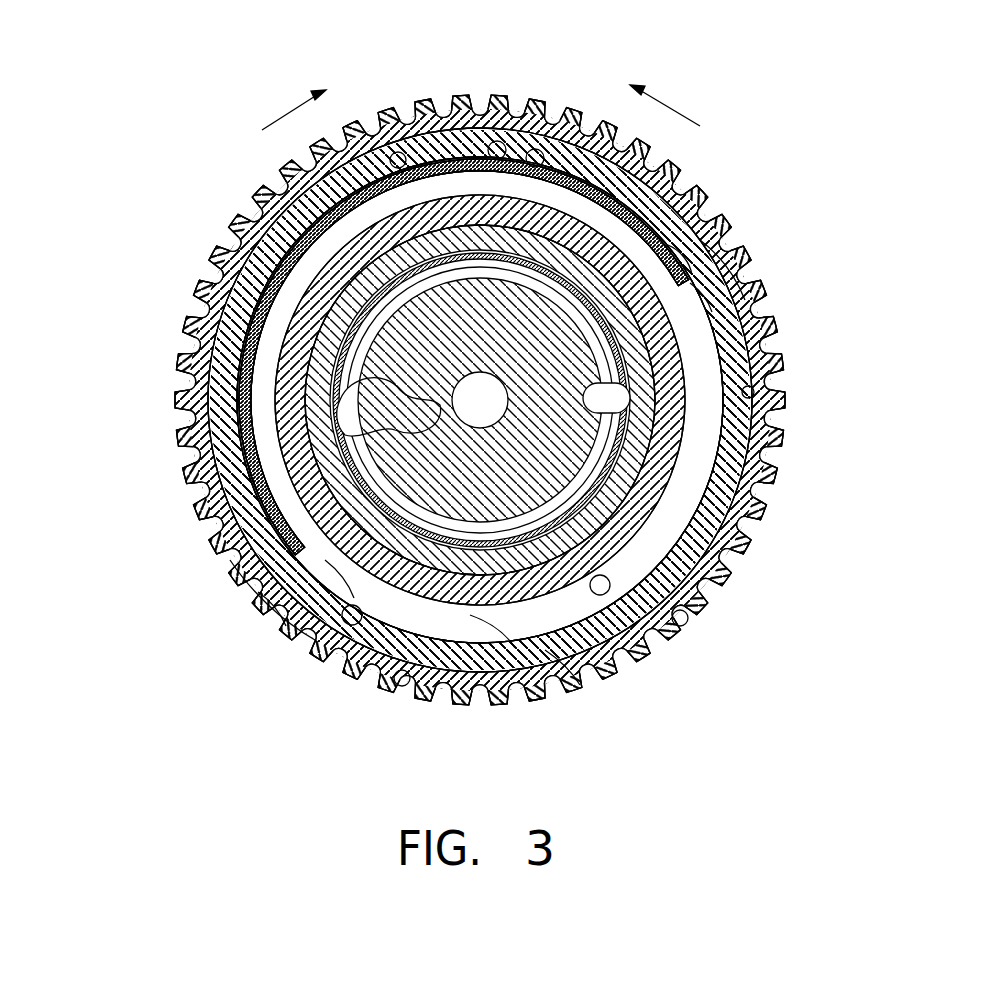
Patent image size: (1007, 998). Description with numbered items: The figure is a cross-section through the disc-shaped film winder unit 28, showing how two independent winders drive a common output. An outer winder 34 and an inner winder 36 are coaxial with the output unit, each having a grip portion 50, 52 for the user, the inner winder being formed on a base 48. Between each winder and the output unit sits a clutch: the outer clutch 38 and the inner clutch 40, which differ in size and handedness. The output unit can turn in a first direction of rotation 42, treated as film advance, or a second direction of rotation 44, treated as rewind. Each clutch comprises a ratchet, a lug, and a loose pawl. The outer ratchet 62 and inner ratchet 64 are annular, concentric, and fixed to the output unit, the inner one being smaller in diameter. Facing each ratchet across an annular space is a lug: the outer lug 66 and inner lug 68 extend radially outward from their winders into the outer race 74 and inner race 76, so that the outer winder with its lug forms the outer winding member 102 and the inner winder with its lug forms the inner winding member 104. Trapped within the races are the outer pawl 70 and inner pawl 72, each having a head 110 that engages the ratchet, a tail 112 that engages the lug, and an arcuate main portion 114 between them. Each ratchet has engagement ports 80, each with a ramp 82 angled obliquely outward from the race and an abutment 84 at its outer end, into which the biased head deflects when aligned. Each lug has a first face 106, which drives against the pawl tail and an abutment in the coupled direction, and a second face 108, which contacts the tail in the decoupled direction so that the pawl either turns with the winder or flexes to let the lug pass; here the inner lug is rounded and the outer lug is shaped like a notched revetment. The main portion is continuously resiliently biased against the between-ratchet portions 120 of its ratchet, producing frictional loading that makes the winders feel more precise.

The film winder unit 28 is at (775, 92).
The outer winder 34 is at (197, 467).
The inner winder 36 is at (588, 160).
The outer clutch 38 is at (778, 182).
The inner clutch 40 is at (157, 573).
The first direction of rotation 42 is at (700, 126).
The second direction of rotation 44 is at (283, 116).
The base 48 is at (480, 400).
The grip portion 50 is at (480, 400).
The grip portion 52 is at (480, 400).
The outer ratchet 62 is at (680, 262).
The inner ratchet 64 is at (300, 585).
The outer lug 66 is at (700, 283).
The inner lug 68 is at (262, 605).
The outer pawl 70 is at (262, 200).
The inner pawl 72 is at (635, 195).
The outer race 74 is at (560, 675).
The inner race 76 is at (495, 630).
The engagement port 80 is at (497, 141).
The ramp 82 is at (536, 149).
The abutment 84 is at (396, 152).
The outer winding member 102 is at (480, 400).
The inner winding member 104 is at (480, 400).
The first face 106 is at (690, 392).
The second face 108 is at (374, 433).
The head 110 is at (352, 625).
The tail 112 is at (795, 427).
The main portion 114 is at (480, 400).
The between-ratchet portions 120 is at (430, 595).